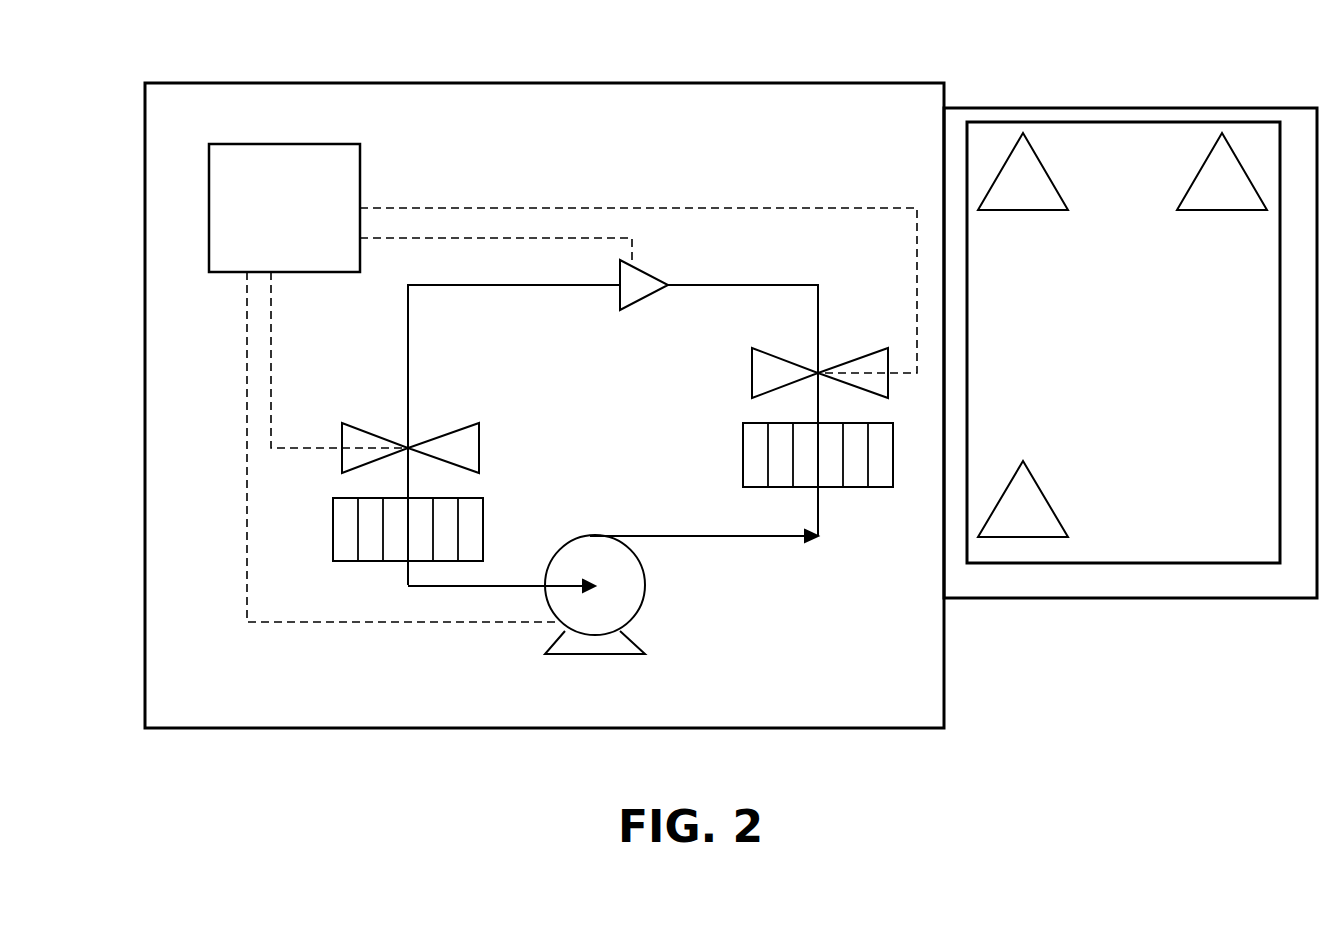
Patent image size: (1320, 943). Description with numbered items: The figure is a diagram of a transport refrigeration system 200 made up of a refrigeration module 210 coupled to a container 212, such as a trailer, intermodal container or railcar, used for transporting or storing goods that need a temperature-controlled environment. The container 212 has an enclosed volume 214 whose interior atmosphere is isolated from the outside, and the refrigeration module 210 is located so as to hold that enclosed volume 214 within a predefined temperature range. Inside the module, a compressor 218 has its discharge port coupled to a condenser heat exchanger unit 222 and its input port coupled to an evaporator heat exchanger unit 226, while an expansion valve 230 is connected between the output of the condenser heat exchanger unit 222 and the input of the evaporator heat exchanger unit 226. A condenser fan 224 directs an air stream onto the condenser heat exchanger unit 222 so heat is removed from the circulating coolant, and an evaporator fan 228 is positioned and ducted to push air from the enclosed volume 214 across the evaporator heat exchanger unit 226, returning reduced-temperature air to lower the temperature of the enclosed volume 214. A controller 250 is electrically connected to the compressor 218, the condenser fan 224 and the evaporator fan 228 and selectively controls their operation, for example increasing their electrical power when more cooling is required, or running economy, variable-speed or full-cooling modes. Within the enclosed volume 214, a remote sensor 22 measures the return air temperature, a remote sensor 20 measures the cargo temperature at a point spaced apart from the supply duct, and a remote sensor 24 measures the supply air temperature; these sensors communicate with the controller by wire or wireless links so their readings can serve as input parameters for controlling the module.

The transport refrigeration system 200 is at (720, 44).
The refrigeration module 210 is at (544, 405).
The container 212 is at (1066, 600).
The enclosed volume 214 is at (1123, 342).
The compressor 218 is at (645, 586).
The condenser heat exchanger unit 222 is at (743, 447).
The condenser fan 224 is at (752, 360).
The evaporator heat exchanger unit 226 is at (483, 498).
The evaporator fan 228 is at (483, 435).
The expansion valve 230 is at (643, 300).
The controller 250 is at (563, 383).
The remote sensor 20 is at (1212, 212).
The remote sensor 22 is at (1015, 212).
The remote sensor 24 is at (1042, 485).